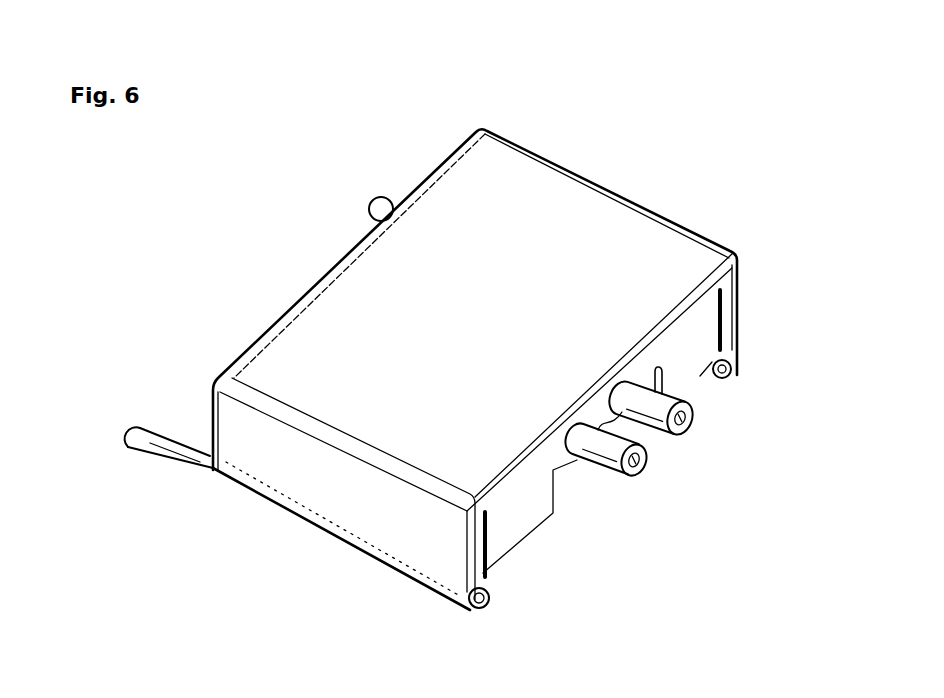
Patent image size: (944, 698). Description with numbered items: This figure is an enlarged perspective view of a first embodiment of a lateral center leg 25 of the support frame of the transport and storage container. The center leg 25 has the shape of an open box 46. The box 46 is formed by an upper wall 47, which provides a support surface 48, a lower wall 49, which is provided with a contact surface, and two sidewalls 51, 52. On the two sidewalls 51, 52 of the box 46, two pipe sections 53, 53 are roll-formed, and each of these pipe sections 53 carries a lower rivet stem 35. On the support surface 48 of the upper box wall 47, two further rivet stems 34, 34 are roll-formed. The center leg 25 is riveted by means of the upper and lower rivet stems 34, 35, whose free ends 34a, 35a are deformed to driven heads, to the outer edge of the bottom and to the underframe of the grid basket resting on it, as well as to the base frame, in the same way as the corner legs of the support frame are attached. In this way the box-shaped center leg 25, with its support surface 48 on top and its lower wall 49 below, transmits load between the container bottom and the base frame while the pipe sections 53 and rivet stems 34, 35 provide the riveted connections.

The lateral center leg 25 is at (520, 131).
The rivet stem 34 is at (597, 447).
The free end 34a is at (645, 470).
The rivet stem 35 is at (383, 200).
The free end 35a is at (370, 203).
The open box 46 is at (545, 232).
The upper wall 47 is at (515, 523).
The support surface 48 is at (688, 358).
The lower wall 49 is at (298, 302).
The sidewall 51 is at (328, 508).
The sidewall 52 is at (677, 223).
The pipe section 53 is at (735, 373).